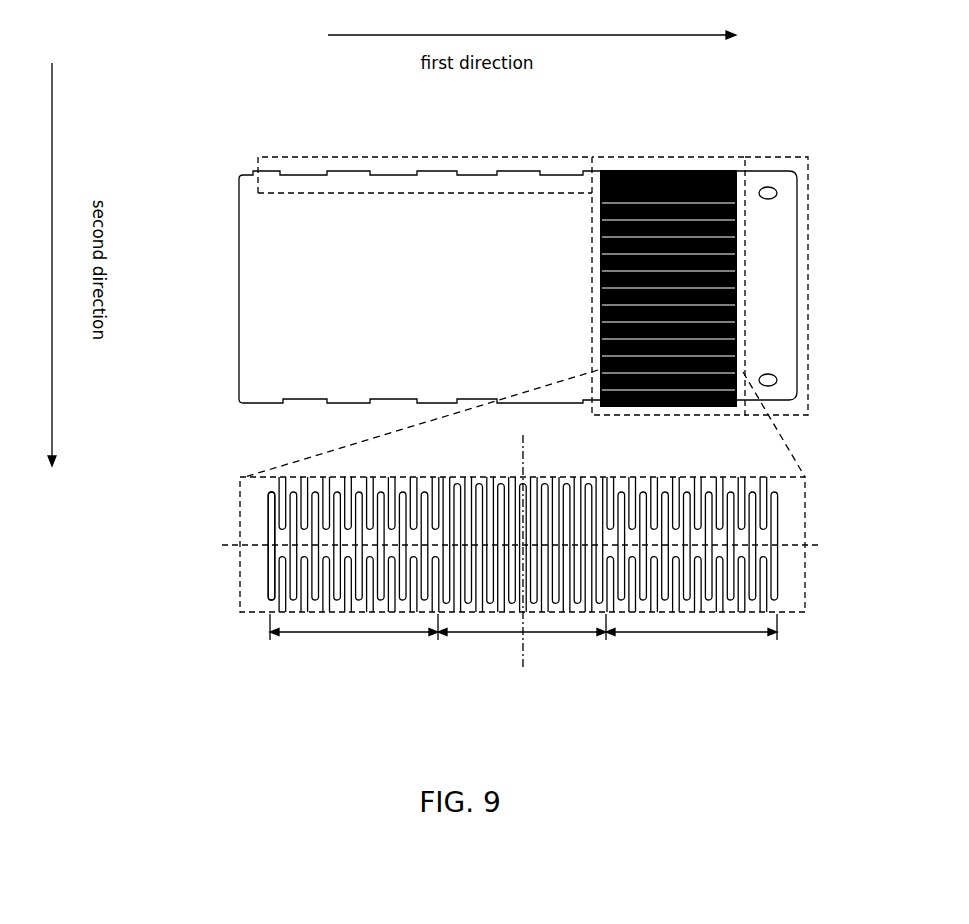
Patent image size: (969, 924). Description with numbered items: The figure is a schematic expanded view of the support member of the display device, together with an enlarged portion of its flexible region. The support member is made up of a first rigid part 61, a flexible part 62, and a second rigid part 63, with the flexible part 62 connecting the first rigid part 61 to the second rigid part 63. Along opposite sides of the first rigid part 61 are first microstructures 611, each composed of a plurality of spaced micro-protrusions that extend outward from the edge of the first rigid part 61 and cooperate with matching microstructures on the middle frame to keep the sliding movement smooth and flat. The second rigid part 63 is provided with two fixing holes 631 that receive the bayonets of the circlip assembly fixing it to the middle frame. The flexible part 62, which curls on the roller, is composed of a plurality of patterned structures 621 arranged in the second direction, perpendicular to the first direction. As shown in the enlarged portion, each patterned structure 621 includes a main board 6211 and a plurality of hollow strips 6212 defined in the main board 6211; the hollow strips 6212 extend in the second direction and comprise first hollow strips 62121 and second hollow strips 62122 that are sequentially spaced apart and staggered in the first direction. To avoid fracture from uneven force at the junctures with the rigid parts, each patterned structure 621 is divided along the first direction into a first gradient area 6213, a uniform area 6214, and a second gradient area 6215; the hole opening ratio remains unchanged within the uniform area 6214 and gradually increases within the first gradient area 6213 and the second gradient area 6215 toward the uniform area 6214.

The first rigid part 61 is at (268, 318).
The first microstructures 611 is at (420, 193).
The flexible part 62 is at (658, 172).
The second rigid part 63 is at (788, 268).
The fixing holes 631 is at (768, 186).
The patterned structures 621 is at (808, 578).
The main board 6211 is at (766, 535).
The hollow strips 6212 is at (110, 588).
The first hollow strips 62121 is at (271, 538).
The second hollow strips 62122 is at (280, 584).
The first gradient area 6213 is at (354, 641).
The uniform area 6214 is at (522, 641).
The second gradient area 6215 is at (691, 641).